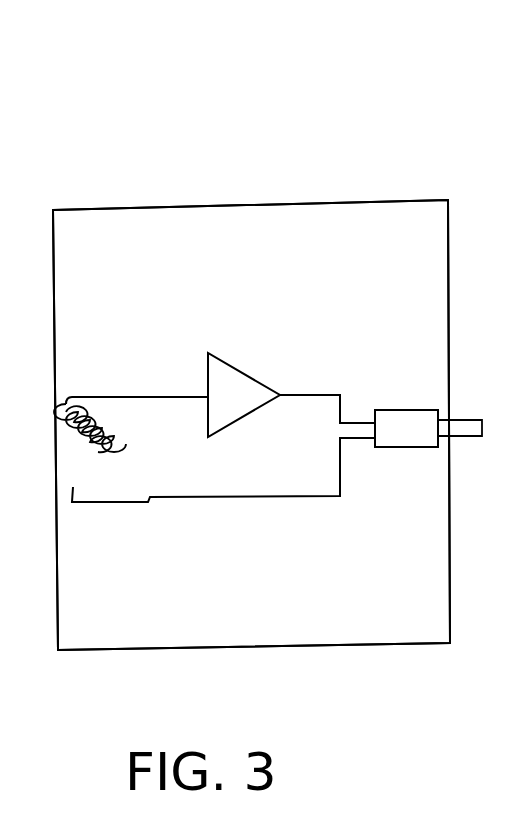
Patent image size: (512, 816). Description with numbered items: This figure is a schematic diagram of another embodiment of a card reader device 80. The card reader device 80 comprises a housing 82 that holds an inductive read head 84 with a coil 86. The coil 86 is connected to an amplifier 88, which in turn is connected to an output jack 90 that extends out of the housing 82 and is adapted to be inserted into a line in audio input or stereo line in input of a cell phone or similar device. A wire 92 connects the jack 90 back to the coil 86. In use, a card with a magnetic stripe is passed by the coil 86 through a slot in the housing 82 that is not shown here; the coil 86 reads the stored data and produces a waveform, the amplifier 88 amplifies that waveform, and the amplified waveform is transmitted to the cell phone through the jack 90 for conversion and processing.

The card reader device 80 is at (196, 172).
The housing 82 is at (383, 200).
The inductive read head 84 is at (131, 388).
The coil 86 is at (93, 448).
The amplifier 88 is at (240, 372).
The output jack 90 is at (403, 408).
The wire 92 is at (218, 497).